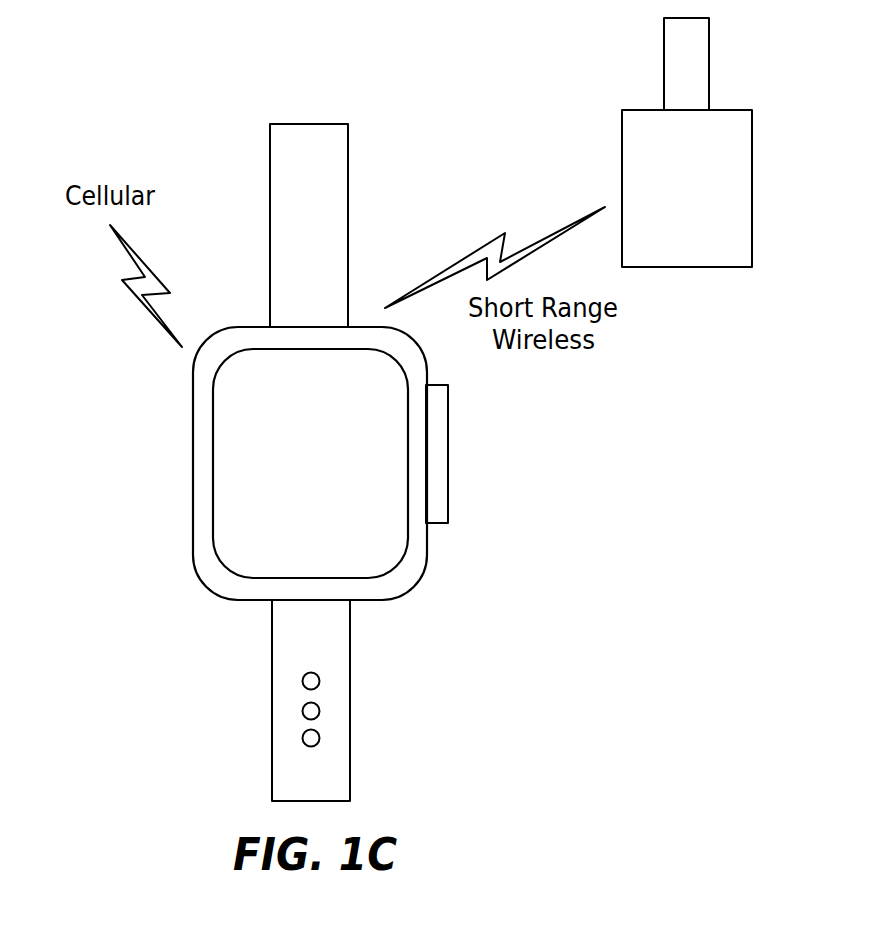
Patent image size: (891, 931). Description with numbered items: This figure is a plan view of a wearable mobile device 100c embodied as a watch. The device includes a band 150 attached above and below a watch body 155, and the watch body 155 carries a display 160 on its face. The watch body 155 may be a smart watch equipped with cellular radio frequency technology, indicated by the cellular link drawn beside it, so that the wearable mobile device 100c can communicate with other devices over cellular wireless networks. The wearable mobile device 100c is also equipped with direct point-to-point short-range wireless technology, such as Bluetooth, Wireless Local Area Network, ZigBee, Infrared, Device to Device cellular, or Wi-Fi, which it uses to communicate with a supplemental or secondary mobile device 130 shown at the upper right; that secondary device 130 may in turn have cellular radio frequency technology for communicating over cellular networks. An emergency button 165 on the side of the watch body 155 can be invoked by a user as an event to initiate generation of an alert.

The wearable mobile device 100c is at (268, 80).
The supplemental or secondary mobile device 130 is at (750, 187).
The band 150 is at (350, 223).
The watch body 155 is at (195, 467).
The display 160 is at (265, 452).
The emergency button 165 is at (448, 453).